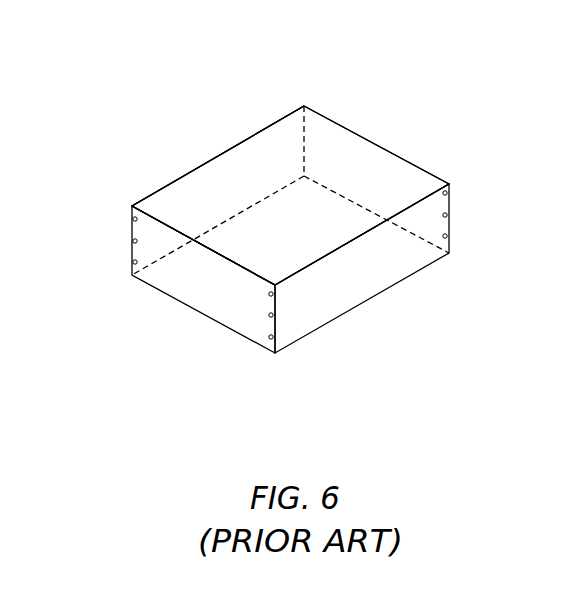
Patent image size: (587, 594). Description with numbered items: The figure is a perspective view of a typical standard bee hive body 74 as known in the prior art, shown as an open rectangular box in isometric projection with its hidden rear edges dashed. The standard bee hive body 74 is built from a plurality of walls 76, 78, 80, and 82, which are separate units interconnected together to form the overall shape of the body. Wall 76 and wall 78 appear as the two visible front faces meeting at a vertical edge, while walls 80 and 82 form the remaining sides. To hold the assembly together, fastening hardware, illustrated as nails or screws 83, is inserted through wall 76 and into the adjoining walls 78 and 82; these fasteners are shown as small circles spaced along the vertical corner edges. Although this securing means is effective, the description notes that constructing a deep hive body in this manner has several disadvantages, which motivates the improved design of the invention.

The standard bee hive body 74 is at (199, 101).
The wall 76 is at (192, 290).
The wall 78 is at (355, 294).
The wall 80 is at (358, 157).
The wall 82 is at (197, 183).
The nails or screws 83 is at (133, 219).